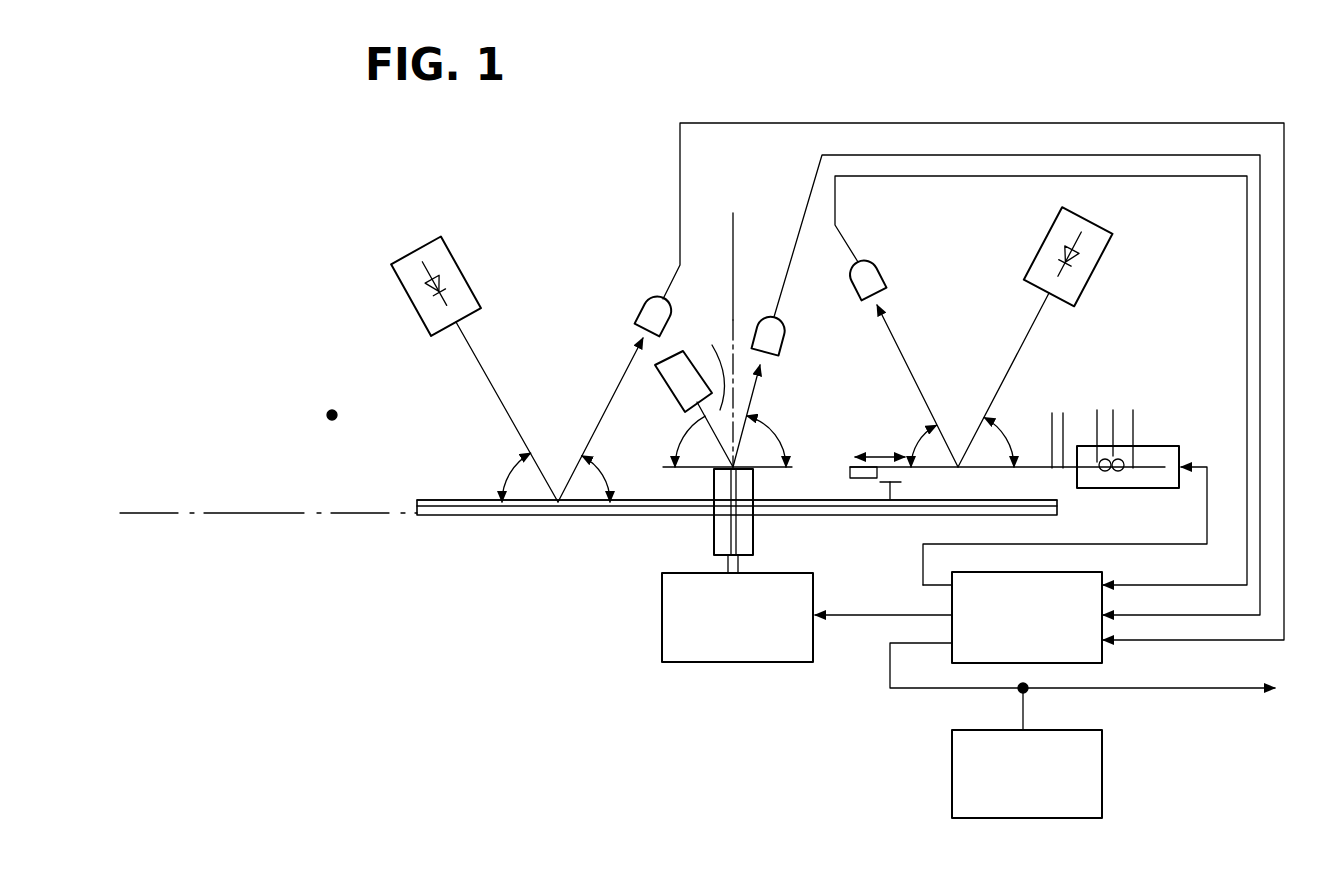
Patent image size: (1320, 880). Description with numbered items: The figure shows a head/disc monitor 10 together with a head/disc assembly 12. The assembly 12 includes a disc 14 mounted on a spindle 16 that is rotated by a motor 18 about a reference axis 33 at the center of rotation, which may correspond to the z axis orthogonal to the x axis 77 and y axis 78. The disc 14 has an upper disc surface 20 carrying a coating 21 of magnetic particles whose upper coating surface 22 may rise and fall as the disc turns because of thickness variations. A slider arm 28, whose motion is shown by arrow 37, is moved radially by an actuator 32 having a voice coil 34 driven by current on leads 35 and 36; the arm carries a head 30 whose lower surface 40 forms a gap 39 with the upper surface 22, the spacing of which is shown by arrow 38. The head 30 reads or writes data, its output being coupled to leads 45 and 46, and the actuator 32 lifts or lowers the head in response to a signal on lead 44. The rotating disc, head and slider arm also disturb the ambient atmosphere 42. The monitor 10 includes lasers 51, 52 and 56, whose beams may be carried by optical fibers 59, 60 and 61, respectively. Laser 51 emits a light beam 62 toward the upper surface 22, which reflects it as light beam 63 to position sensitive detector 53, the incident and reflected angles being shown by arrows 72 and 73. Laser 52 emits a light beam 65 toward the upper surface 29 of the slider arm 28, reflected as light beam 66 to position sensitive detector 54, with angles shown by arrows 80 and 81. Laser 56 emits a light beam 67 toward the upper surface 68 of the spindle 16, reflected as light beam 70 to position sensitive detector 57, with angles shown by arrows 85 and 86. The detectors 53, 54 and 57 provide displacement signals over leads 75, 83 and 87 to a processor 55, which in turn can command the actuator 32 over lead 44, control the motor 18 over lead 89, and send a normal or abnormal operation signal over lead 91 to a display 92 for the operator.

The head/disc monitor 10 is at (372, 237).
The head/disc assembly 12 is at (450, 556).
The disc 14 is at (686, 486).
The upper disc surface 20 is at (440, 508).
The spindle 16 is at (723, 527).
The motor 18 is at (662, 617).
The coating 21 is at (724, 462).
The upper coating surface 22 is at (462, 500).
The slider arm 28 is at (963, 415).
The upper surface of slider arm 29 is at (958, 420).
The head 30 is at (833, 453).
The lower surface of head 40 is at (849, 470).
The actuator 32 is at (1178, 446).
The reference axis 33 is at (730, 272).
The voice coil 34 is at (1132, 410).
The lead 35 is at (1097, 410).
The lead 36 is at (1135, 422).
The arrow 37 is at (880, 452).
The arrow 38 is at (900, 484).
The gap 39 is at (866, 488).
The ambient atmosphere 42 is at (325, 418).
The lead 44 is at (1207, 517).
The lead 45 is at (1048, 425).
The lead 46 is at (1066, 412).
The laser 51 is at (418, 312).
The laser 52 is at (1040, 245).
The position sensitive detector 53 is at (645, 302).
The position sensitive detector 54 is at (883, 280).
The processor 55 is at (1100, 656).
The position sensitive detector 57 is at (786, 338).
The optical fiber 59 is at (469, 412).
The light beam 62 is at (478, 376).
The optical fiber 60 is at (988, 380).
The light beam 65 is at (1020, 345).
The optical fiber 61 is at (664, 409).
The laser 56 is at (670, 392).
The light beam 63 is at (620, 380).
The light beam 66 is at (898, 330).
The light beam 67 is at (712, 347).
The upper surface of spindle 68 is at (713, 458).
The light beam 70 is at (760, 380).
The arrow 72 is at (512, 458).
The arrow 73 is at (597, 466).
The lead 75 is at (680, 180).
The x axis 77 is at (272, 520).
The y axis 78 is at (735, 508).
The arrow 80 is at (1018, 468).
The arrow 81 is at (918, 432).
The lead 83 is at (836, 198).
The arrow 85 is at (696, 422).
The arrow 86 is at (776, 428).
The lead 87 is at (793, 256).
The lead 89 is at (866, 618).
The lead 91 is at (930, 690).
The display 92 is at (950, 772).